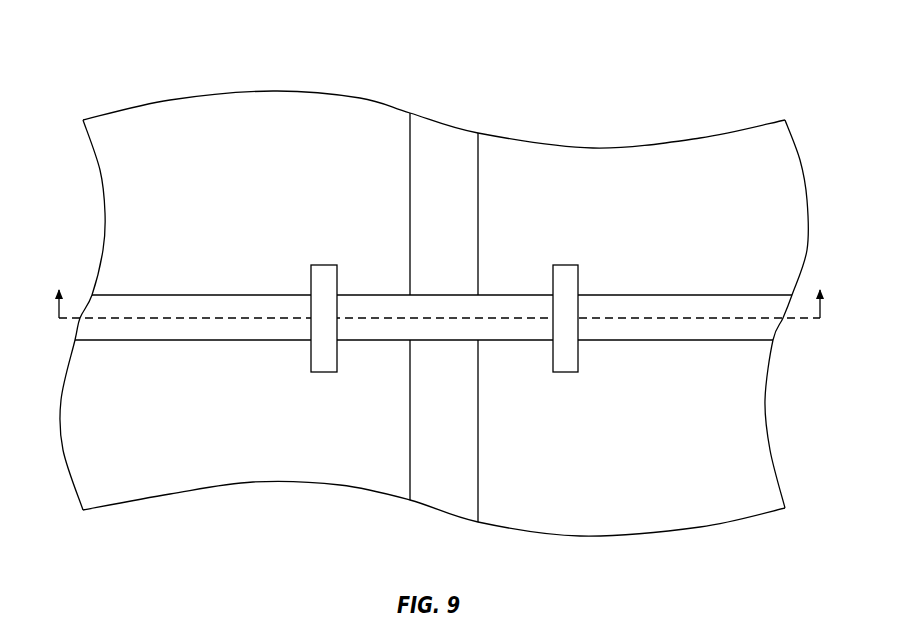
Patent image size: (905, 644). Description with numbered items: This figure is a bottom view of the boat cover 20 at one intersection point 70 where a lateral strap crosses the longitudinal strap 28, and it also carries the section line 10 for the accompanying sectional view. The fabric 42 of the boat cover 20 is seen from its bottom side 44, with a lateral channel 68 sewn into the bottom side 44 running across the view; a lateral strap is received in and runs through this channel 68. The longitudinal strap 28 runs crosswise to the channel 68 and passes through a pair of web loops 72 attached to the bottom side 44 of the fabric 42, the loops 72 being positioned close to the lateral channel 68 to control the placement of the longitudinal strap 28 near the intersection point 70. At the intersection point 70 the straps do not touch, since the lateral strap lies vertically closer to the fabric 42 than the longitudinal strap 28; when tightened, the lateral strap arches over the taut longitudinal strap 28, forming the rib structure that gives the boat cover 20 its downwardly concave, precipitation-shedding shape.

The section line 10- 10 is at (441, 291).
The boat cover 20 is at (676, 88).
The longitudinal strap 28 is at (748, 332).
The fabric 42 is at (777, 50).
The bottom side 44 is at (716, 236).
The lateral channel 68 is at (467, 490).
The intersection point 70 is at (445, 307).
The web loop 72 is at (323, 372).